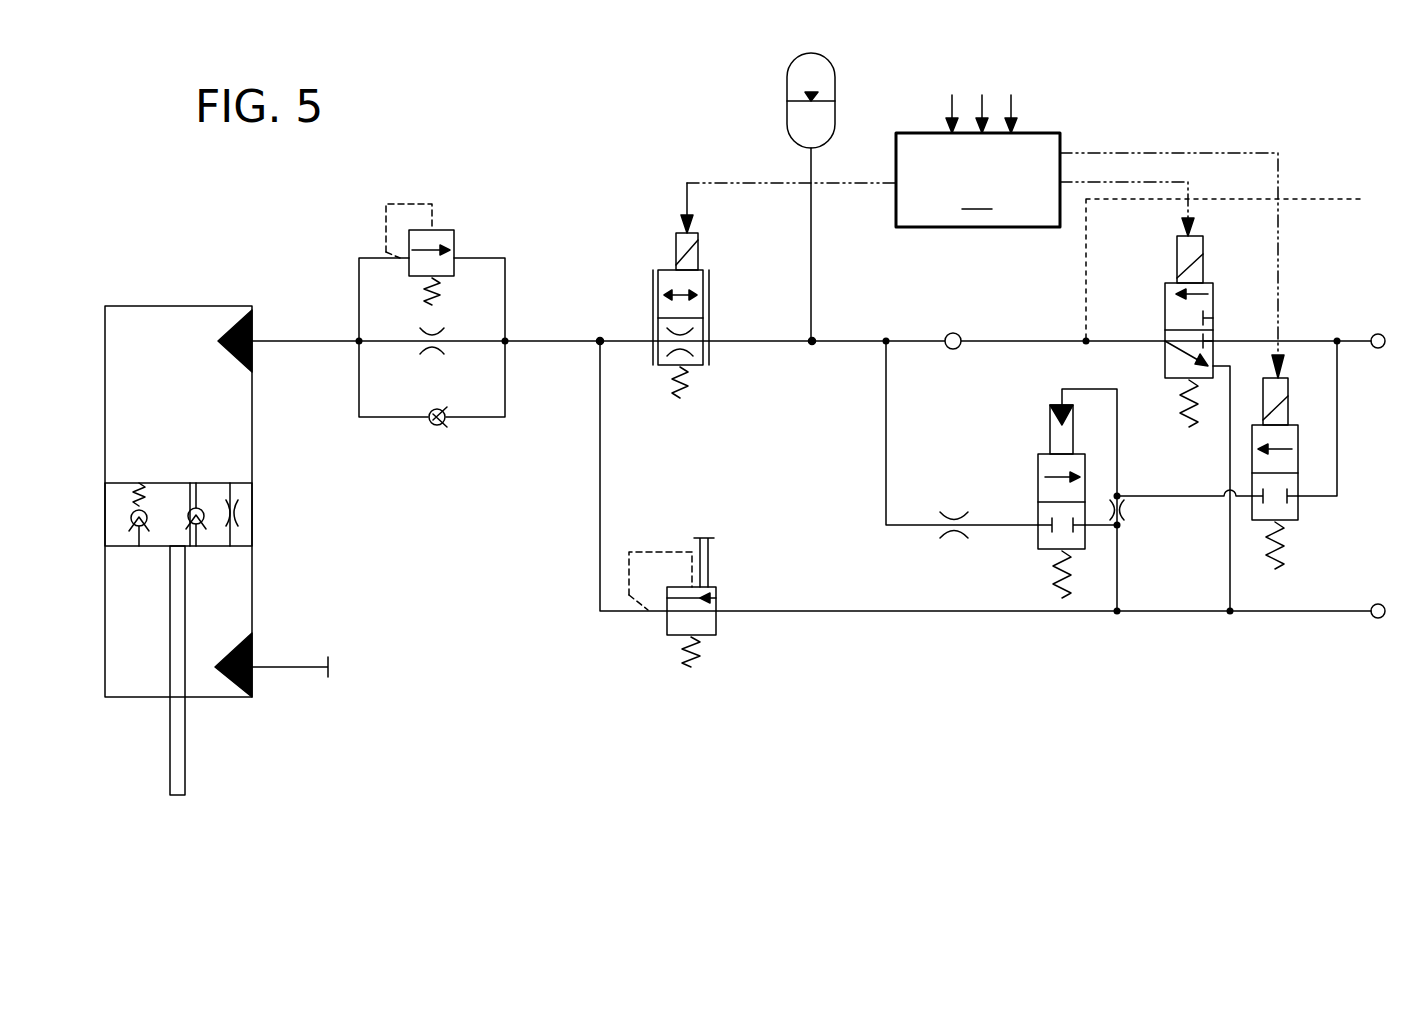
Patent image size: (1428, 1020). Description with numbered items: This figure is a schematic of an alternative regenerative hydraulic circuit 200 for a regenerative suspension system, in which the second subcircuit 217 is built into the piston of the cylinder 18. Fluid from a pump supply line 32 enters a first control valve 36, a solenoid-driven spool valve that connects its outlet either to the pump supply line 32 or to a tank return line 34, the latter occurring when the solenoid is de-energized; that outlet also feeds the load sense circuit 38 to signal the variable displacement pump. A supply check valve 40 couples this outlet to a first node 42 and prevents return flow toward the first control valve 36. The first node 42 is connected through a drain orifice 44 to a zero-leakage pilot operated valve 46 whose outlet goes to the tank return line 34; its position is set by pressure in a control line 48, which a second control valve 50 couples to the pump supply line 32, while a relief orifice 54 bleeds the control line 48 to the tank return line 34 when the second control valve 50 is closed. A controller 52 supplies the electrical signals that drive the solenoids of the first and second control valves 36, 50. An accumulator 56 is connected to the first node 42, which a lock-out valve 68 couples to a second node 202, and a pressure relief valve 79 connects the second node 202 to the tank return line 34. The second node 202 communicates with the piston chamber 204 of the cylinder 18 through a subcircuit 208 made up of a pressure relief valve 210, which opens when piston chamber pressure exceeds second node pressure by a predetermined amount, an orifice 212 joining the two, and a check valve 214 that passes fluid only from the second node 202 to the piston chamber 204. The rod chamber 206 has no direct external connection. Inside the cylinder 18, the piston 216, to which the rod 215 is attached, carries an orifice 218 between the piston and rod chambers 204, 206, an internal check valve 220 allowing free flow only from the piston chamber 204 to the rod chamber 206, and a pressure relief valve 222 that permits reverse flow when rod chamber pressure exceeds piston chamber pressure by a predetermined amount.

The cylinder 18 is at (165, 305).
The pump supply line 32 is at (1360, 346).
The tank return line 34 is at (1350, 611).
The first control valve 36 is at (1213, 306).
The load sense circuit 38 is at (1346, 203).
The supply check valve 40 is at (953, 332).
The first node 42 is at (812, 348).
The drain orifice 44 is at (955, 513).
The pilot operated valve 46 is at (1038, 501).
The control line 48 is at (1185, 497).
The second control valve 50 is at (1298, 515).
The controller 52 is at (1090, 236).
The relief orifice 54 is at (1124, 508).
The accumulator 56 is at (836, 108).
The lock-out valve 68 is at (655, 296).
The pressure relief valve 79 is at (716, 600).
The regenerative hydraulic circuit 200 is at (597, 182).
The second node 202 is at (600, 338).
The piston chamber 204 is at (220, 405).
The rod chamber 206 is at (225, 601).
The subcircuit 208 is at (465, 418).
The pressure relief valve 210 is at (440, 232).
The orifice 212 is at (433, 355).
The check valve 214 is at (432, 426).
The rod 215 is at (183, 746).
The piston 216 is at (240, 546).
The second subcircuit 217 is at (150, 547).
The orifice 218 is at (242, 514).
The internal check valve 220 is at (203, 500).
The pressure relief valve 222 is at (153, 492).